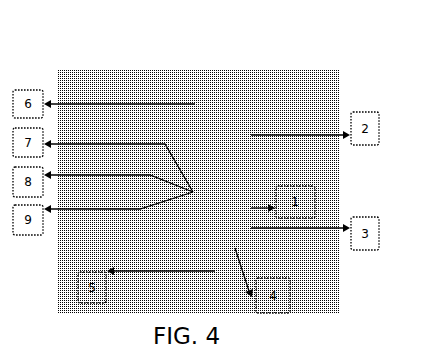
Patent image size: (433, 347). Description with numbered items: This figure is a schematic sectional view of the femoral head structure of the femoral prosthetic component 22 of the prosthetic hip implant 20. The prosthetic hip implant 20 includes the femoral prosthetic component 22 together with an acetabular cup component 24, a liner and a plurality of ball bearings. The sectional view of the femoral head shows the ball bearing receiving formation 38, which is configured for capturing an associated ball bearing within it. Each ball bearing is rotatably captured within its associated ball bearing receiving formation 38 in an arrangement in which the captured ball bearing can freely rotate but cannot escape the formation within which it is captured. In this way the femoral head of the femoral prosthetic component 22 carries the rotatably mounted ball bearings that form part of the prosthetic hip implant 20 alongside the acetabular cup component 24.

The prosthetic hip implant 20 is at (276, 75).
The femoral prosthetic component 22 is at (228, 92).
The acetabular cup component 24 is at (424, 346).
The ball bearing receiving formation 38 is at (128, 176).